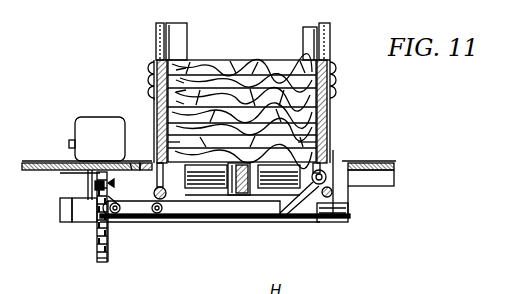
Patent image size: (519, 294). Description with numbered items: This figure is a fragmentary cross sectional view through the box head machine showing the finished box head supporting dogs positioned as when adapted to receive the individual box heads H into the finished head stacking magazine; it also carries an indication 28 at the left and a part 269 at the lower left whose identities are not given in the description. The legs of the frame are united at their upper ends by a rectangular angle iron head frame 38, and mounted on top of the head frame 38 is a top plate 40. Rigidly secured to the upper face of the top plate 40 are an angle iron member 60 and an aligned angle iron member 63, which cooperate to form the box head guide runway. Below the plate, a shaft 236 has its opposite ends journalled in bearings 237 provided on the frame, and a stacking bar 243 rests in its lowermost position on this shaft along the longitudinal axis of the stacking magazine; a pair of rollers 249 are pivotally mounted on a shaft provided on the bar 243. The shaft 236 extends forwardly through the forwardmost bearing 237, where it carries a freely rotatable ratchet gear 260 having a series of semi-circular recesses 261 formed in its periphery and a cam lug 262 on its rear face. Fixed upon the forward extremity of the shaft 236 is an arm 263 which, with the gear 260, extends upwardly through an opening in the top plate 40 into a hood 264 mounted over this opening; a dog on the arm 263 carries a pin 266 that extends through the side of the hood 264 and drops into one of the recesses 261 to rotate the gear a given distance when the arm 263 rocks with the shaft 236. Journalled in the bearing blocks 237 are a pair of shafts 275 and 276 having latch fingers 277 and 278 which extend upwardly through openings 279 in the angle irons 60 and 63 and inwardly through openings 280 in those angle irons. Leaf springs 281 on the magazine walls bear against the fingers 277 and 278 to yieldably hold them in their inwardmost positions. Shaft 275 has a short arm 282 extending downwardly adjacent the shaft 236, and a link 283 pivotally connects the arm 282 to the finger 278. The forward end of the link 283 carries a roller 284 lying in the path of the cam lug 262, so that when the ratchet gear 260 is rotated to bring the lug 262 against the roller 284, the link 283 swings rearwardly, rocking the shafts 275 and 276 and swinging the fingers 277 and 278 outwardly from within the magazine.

The box heads H is at (256, 62).
The bale chamber 28 is at (96, 100).
The head frame 38 is at (392, 182).
The top plate 40 is at (398, 170).
The angle iron member 60 is at (378, 165).
The angle iron member 63 is at (128, 162).
The shaft 236 is at (307, 209).
The bearings 237 is at (350, 218).
The stacking bar 243 is at (243, 197).
The rollers 249 is at (205, 190).
The ratchet gear 260 is at (95, 233).
The semi-circular recesses 261 is at (97, 250).
The cam lug 262 is at (118, 204).
The arm 263 is at (90, 185).
The hood 264 is at (80, 120).
The pin 266 is at (69, 143).
The bracket 269 is at (62, 212).
The shaft 275 is at (163, 198).
The shaft 276 is at (332, 192).
The latch finger 277 is at (189, 143).
The latch finger 278 is at (290, 144).
The openings 279 is at (147, 160).
The openings 280 is at (150, 128).
The leaf springs 281 is at (156, 100).
The short arm 282 is at (127, 186).
The link 283 is at (268, 190).
The roller 284 is at (110, 222).